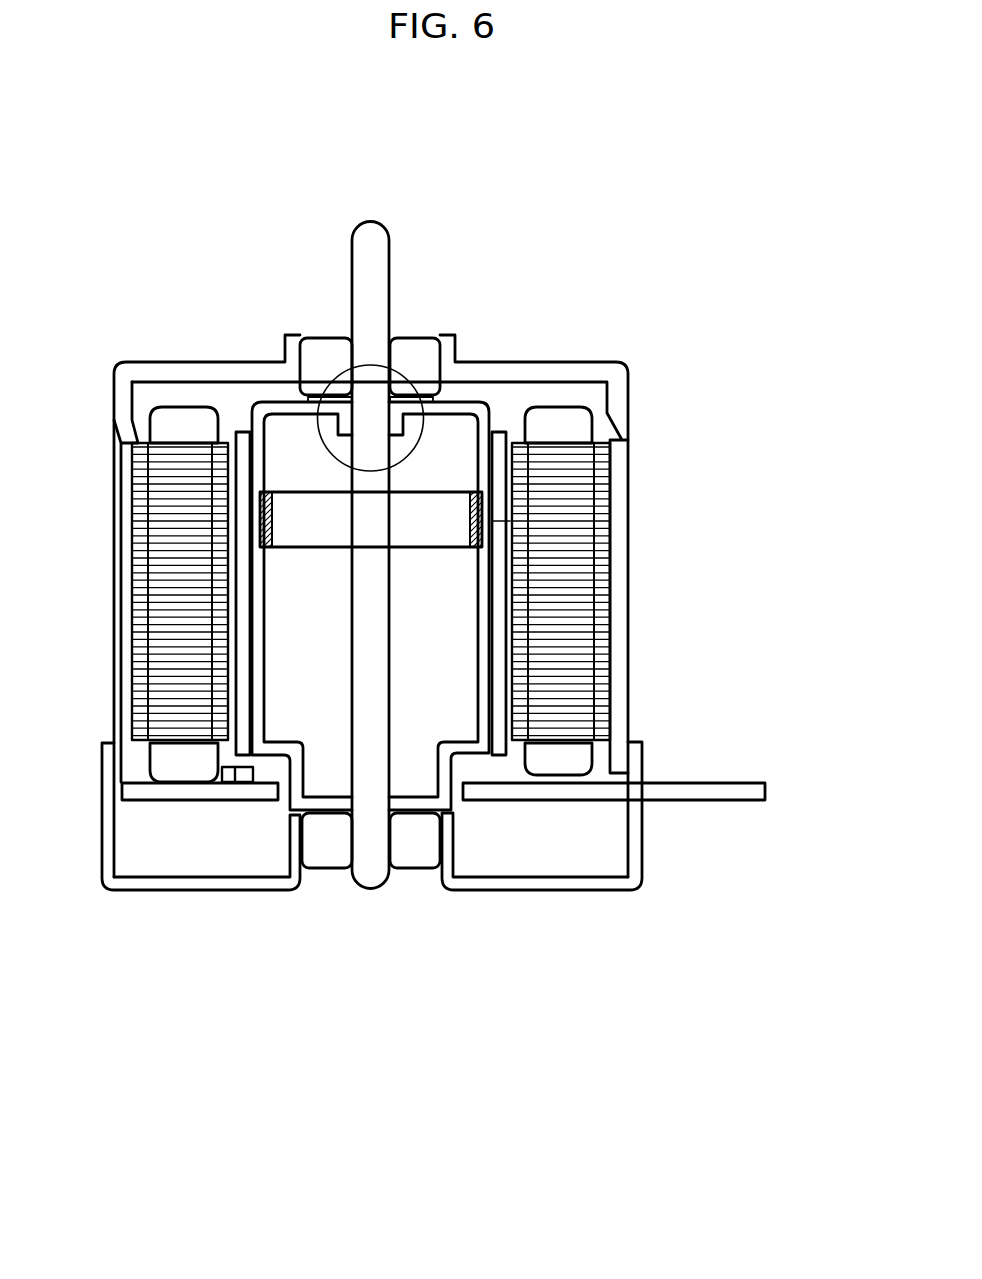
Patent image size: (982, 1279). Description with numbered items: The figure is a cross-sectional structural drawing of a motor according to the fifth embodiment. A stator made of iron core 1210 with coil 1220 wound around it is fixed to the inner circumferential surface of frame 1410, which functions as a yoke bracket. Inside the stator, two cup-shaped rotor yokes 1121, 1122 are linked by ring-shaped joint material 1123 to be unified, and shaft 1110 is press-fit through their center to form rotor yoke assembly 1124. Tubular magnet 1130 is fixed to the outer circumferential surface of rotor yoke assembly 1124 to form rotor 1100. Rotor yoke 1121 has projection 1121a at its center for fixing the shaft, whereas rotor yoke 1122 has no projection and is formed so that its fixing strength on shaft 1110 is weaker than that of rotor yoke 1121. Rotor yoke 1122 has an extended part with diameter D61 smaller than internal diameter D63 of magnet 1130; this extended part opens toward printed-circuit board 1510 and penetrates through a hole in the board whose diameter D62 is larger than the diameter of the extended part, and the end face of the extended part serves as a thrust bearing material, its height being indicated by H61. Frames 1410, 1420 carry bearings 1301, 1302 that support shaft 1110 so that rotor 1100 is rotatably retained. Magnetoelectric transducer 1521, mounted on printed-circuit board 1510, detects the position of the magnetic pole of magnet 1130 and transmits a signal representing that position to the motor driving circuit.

The rotor 1100 is at (821, 438).
The shaft 1110 is at (389, 285).
The rotor yoke 1121 is at (490, 408).
The projection 1121a is at (410, 395).
The rotor yoke 1122 is at (492, 650).
The joint material 1123 is at (482, 538).
The rotor yoke assembly 1124 is at (741, 216).
The magnet 1130 is at (508, 750).
The iron core 1210 is at (147, 557).
The coil 1220 is at (153, 413).
The bearing 1301 is at (320, 337).
The bearing 1302 is at (413, 867).
The frame 1410 is at (127, 362).
The frame 1420 is at (106, 890).
The printed-circuit board 1510 is at (498, 797).
The magnetoelectric transducer 1521 is at (232, 783).
The diameter of extended part D61 is at (452, 752).
The hole diameter D62 is at (465, 800).
The internal diameter of magnet D63 is at (492, 760).
The height dimension H61 is at (102, 877).